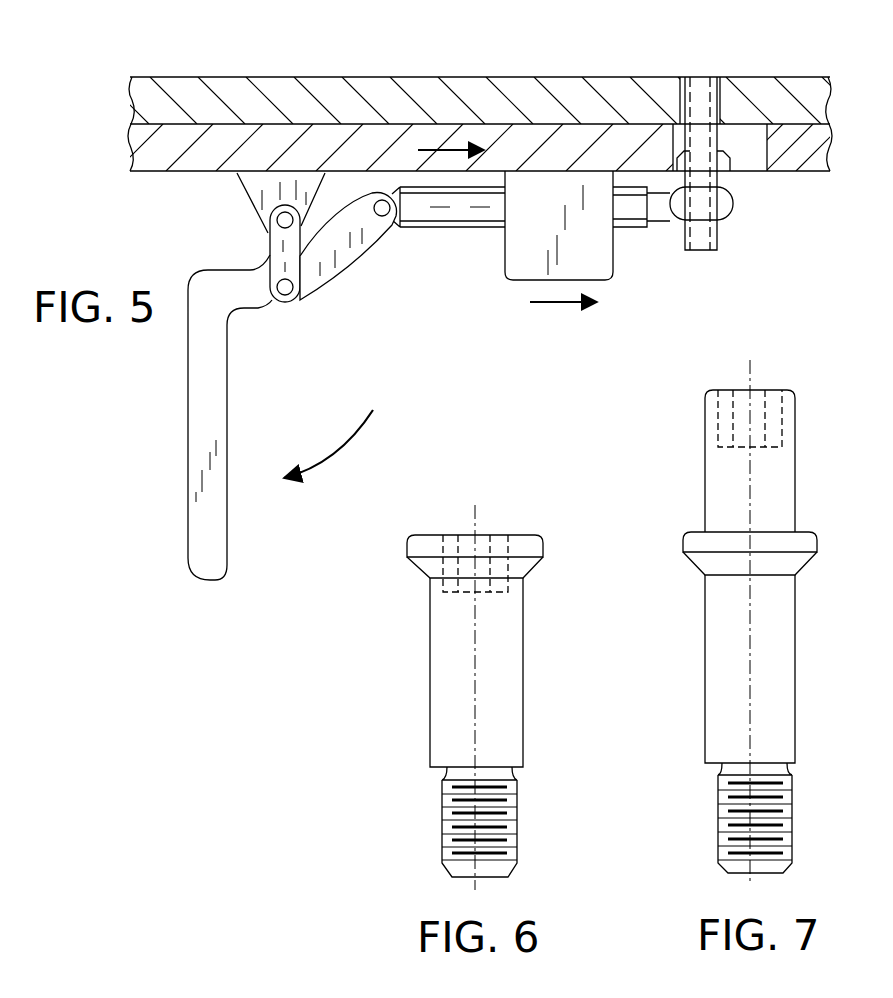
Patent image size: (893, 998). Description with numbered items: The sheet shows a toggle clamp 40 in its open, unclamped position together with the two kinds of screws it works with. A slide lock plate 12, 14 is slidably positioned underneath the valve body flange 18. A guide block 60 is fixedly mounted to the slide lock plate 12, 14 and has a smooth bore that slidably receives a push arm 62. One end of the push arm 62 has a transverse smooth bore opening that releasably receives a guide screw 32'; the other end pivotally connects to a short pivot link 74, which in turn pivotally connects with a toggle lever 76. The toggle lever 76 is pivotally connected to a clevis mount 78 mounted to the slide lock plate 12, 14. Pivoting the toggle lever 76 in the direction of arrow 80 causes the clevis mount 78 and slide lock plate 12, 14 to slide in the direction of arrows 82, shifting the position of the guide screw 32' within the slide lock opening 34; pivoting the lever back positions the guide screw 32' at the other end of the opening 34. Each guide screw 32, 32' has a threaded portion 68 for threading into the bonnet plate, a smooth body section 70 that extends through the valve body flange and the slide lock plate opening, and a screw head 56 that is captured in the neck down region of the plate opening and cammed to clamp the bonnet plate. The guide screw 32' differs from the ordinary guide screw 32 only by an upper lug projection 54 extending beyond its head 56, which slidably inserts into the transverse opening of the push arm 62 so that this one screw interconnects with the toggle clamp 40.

In FIG. 5, the slide lock plate 12 is at (300, 148).
In FIG. 5, the slide lock plate 14 is at (479, 147).
In FIG. 5, the valve body flange 18 is at (497, 77).
In FIG. 5, the arrows 82 is at (462, 142).
In FIG. 5, the slide lock opening 34 is at (678, 124).
In FIG. 5, the guide screw 32' is at (733, 170).
In FIG. 7, the guide screw 32' is at (764, 622).
In FIG. 5, the guide block 60 is at (505, 258).
In FIG. 5, the push arm 62 is at (636, 228).
In FIG. 5, the clevis mount 78 is at (240, 200).
In FIG. 5, the toggle lever 76 is at (187, 440).
In FIG. 5, the pivot link 74 is at (340, 280).
In FIG. 5, the arrow 80 is at (337, 455).
In FIG. 5, the toggle clamp 40 is at (150, 224).
In FIG. 6, the guide screw 32 is at (477, 697).
In FIG. 6, the screw head 56 is at (545, 546).
In FIG. 7, the screw head 56 is at (818, 543).
In FIG. 6, the smooth body section 70 is at (437, 712).
In FIG. 7, the smooth body section 70 is at (727, 695).
In FIG. 6, the threaded portion 68 is at (518, 810).
In FIG. 7, the threaded portion 68 is at (793, 808).
In FIG. 7, the upper lug projection 54 is at (797, 458).